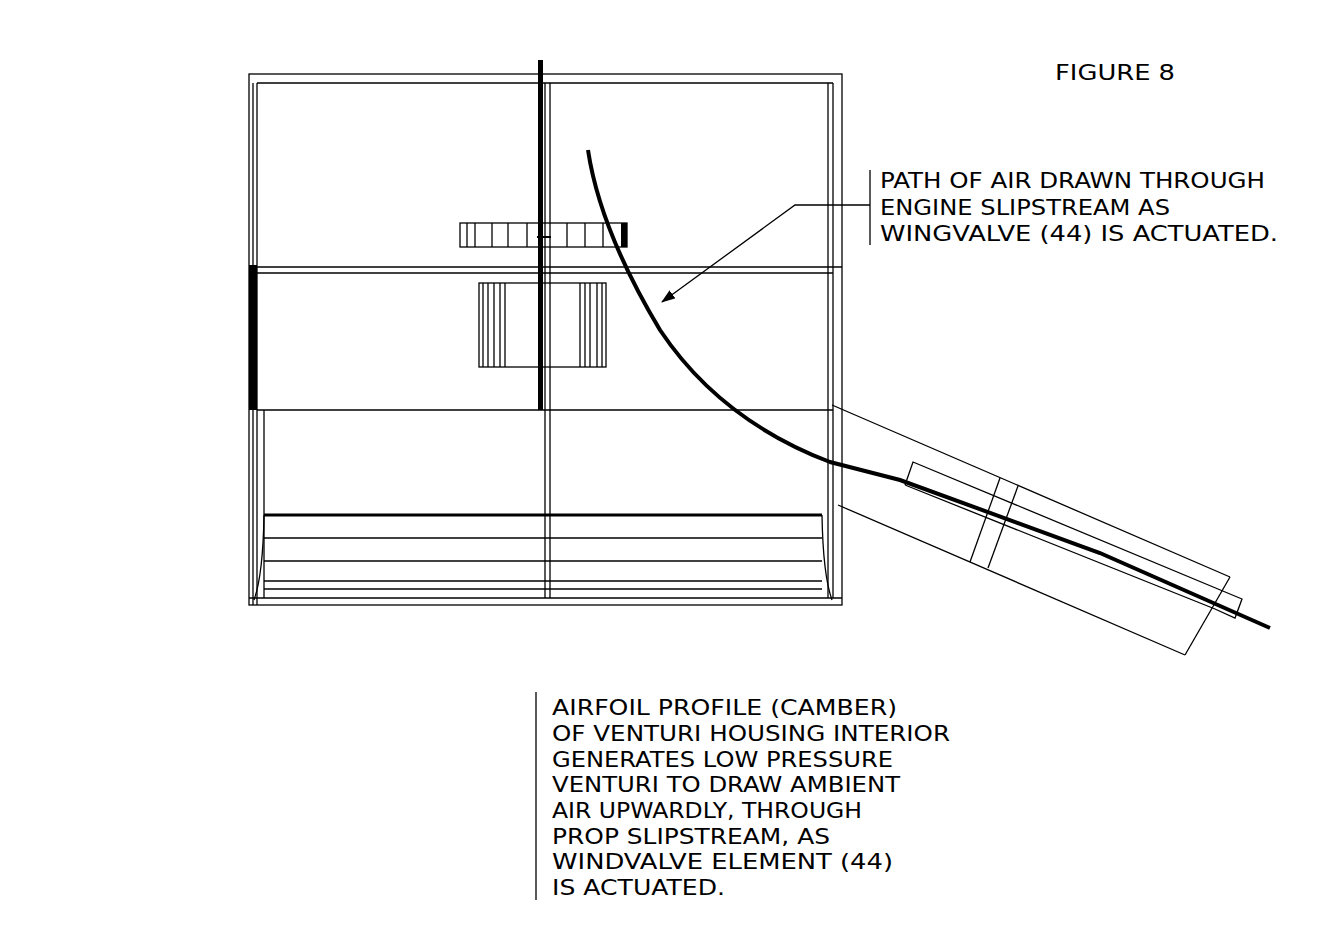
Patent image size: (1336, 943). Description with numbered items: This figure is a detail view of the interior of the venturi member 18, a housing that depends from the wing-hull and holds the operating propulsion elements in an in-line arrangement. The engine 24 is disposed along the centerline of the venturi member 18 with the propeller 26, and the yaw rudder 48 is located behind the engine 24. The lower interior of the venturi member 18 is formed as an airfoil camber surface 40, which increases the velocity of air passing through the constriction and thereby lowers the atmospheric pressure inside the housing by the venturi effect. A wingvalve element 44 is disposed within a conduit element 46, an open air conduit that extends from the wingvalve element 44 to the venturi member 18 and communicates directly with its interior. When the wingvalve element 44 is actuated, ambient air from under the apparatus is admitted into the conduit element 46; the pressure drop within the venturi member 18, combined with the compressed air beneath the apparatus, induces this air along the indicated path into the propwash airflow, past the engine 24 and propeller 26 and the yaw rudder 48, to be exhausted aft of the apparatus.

The venturi member 18 is at (244, 431).
The engine 24 is at (609, 339).
The propeller 26 is at (636, 221).
The airfoil camber surface 40 is at (803, 571).
The wingvalve element 44 is at (1140, 559).
The conduit element 46 is at (999, 469).
The yaw rudder 48 is at (537, 136).